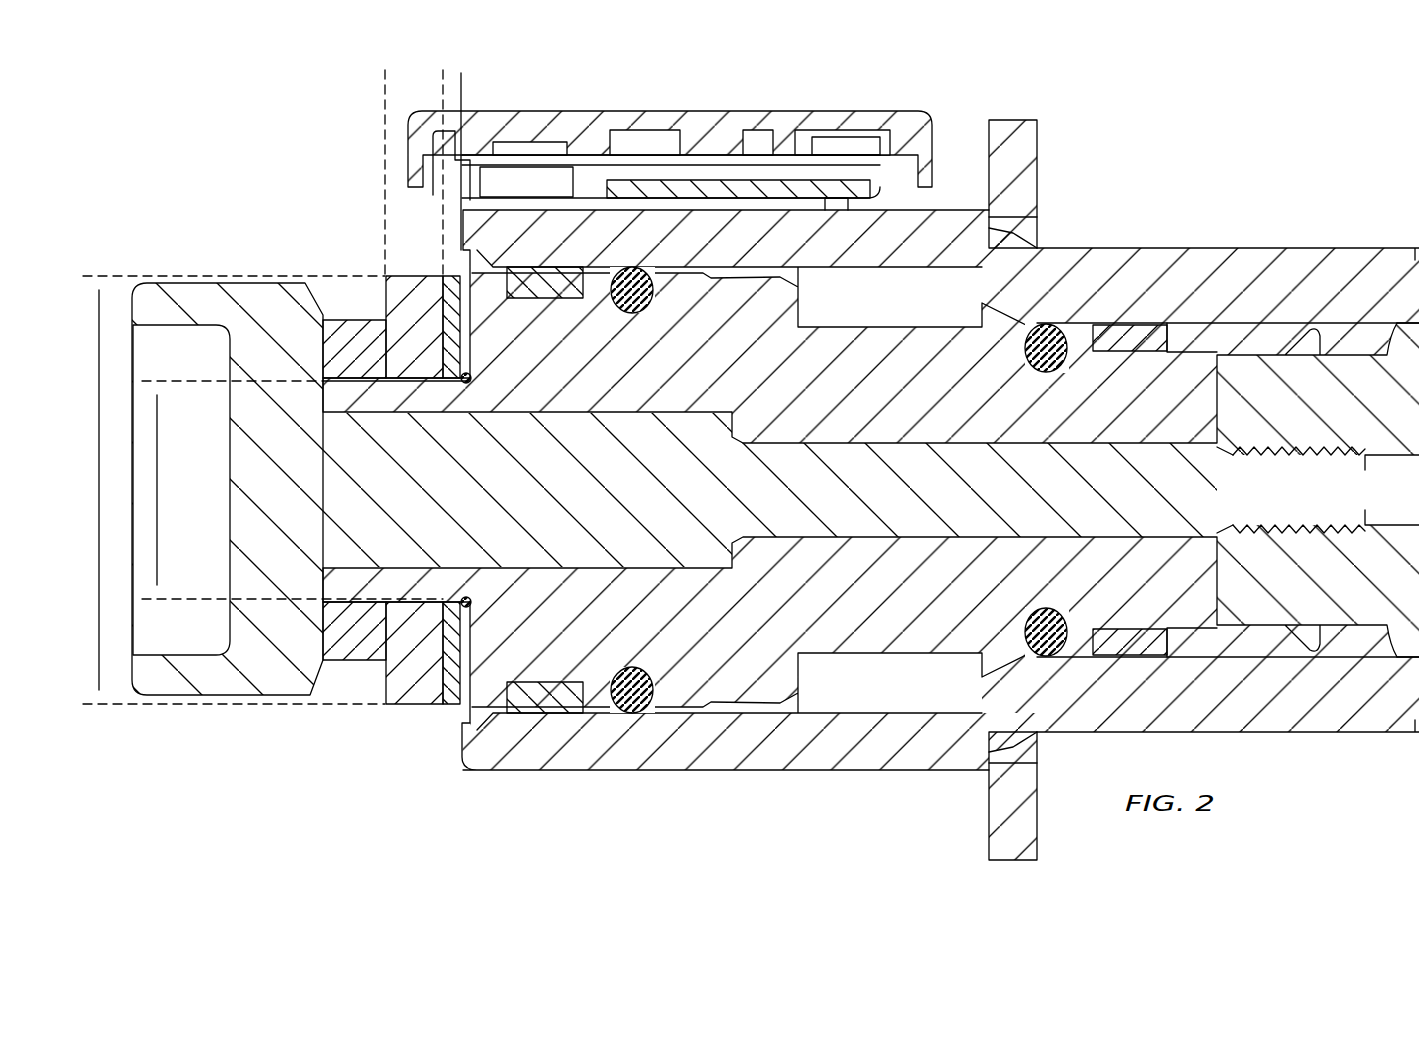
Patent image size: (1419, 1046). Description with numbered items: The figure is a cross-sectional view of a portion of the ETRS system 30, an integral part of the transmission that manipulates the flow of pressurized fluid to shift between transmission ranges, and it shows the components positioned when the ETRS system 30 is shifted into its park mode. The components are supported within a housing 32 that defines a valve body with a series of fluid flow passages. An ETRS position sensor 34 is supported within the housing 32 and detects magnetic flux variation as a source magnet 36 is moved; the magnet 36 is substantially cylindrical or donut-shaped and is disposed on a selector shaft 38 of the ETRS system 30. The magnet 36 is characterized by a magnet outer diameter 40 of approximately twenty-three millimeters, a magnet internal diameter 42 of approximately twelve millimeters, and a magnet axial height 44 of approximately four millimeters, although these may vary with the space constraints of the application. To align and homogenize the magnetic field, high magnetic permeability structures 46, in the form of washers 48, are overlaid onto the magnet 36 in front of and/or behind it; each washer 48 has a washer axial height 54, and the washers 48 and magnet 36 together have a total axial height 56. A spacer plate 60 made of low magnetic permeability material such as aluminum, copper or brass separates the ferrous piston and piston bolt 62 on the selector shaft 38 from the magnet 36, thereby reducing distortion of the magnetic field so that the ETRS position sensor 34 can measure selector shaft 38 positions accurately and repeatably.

The ETRS system 30 is at (1158, 142).
The housing 32 is at (1273, 248).
The ETRS position sensor 34 is at (518, 178).
The magnet 36 is at (405, 705).
The selector shaft 38 is at (538, 625).
The magnet outer diameter 40 is at (230, 490).
The magnet internal diameter 42 is at (292, 490).
The magnet axial height 44 is at (597, 139).
The high magnetic permeability structures 46 is at (449, 564).
The washer 48 is at (455, 705).
The washer axial height 54 is at (466, 213).
The total axial height 56 is at (466, 89).
The spacer plate 60 is at (333, 661).
The piston and piston bolt 62 is at (277, 490).